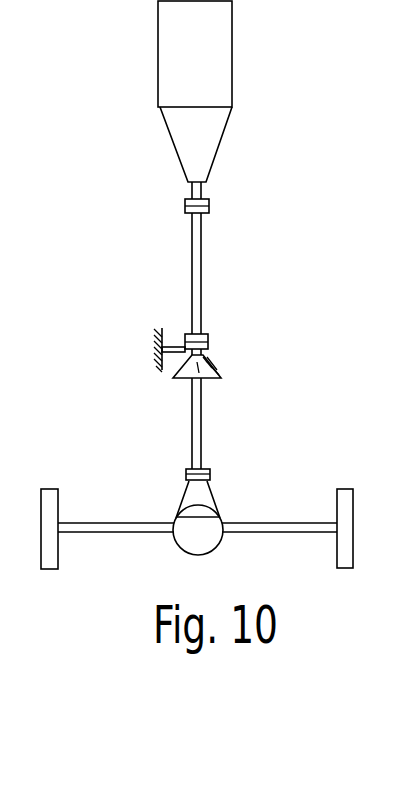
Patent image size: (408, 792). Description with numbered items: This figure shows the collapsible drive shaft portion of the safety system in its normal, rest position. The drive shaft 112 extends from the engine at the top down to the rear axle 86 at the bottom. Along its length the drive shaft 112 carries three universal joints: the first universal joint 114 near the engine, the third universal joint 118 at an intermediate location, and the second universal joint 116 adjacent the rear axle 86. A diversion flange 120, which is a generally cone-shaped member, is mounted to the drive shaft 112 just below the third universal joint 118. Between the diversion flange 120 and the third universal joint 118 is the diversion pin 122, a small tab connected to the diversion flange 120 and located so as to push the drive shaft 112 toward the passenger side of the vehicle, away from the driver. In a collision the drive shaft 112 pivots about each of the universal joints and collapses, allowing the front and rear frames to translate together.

The rear axle 86 is at (112, 530).
The drive shaft 112 is at (192, 245).
The first universal joint 114 is at (209, 202).
The second universal joint 116 is at (211, 472).
The third universal joint 118 is at (208, 338).
The diversion flange 120 is at (218, 372).
The diversion pin 122 is at (173, 352).